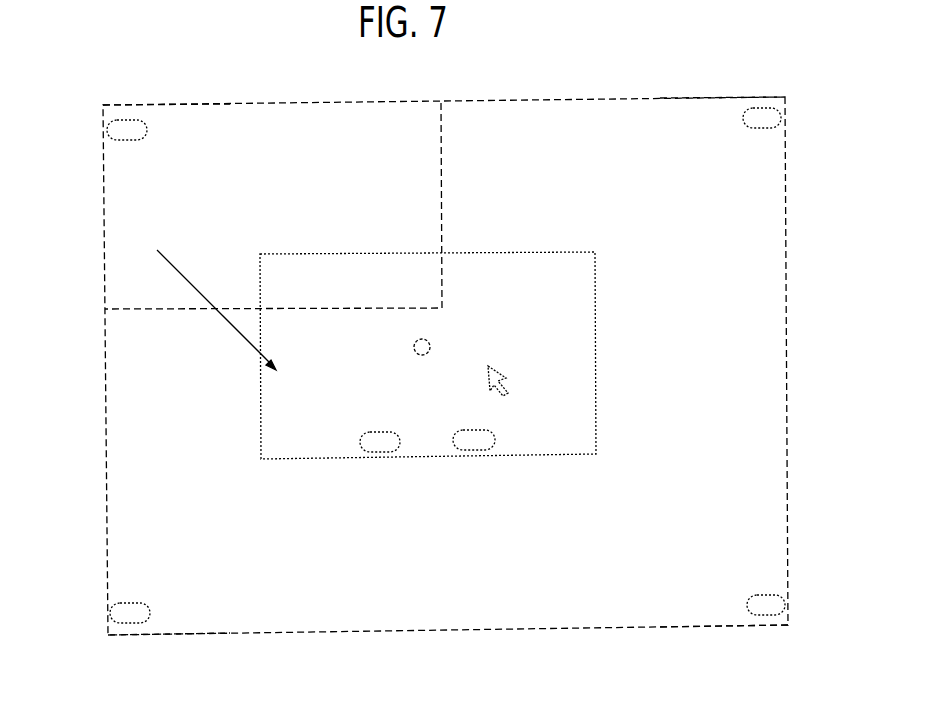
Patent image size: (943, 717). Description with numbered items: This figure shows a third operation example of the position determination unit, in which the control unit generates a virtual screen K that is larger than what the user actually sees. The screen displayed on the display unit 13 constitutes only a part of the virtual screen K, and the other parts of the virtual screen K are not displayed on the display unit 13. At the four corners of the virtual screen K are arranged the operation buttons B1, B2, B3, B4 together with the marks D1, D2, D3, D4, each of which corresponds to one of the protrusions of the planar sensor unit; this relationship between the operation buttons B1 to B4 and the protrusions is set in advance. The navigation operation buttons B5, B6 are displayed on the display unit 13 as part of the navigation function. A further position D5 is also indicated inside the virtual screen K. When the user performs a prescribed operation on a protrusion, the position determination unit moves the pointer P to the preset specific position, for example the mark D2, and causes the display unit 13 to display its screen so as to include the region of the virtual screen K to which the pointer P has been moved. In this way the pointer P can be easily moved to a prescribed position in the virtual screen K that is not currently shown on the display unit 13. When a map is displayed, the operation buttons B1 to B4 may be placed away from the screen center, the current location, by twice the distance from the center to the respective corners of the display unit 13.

The virtual screen K is at (103, 372).
The display unit 13 is at (297, 458).
The mark D1 is at (108, 637).
The mark D2 is at (172, 112).
The mark D3 is at (740, 108).
The mark D4 is at (745, 607).
The region D5 is at (440, 333).
The operation button B1 is at (115, 603).
The operation button B2 is at (103, 135).
The operation button B3 is at (776, 128).
The operation button B4 is at (780, 596).
The operation button B5 is at (375, 450).
The operation button B6 is at (472, 450).
The pointer P is at (507, 377).